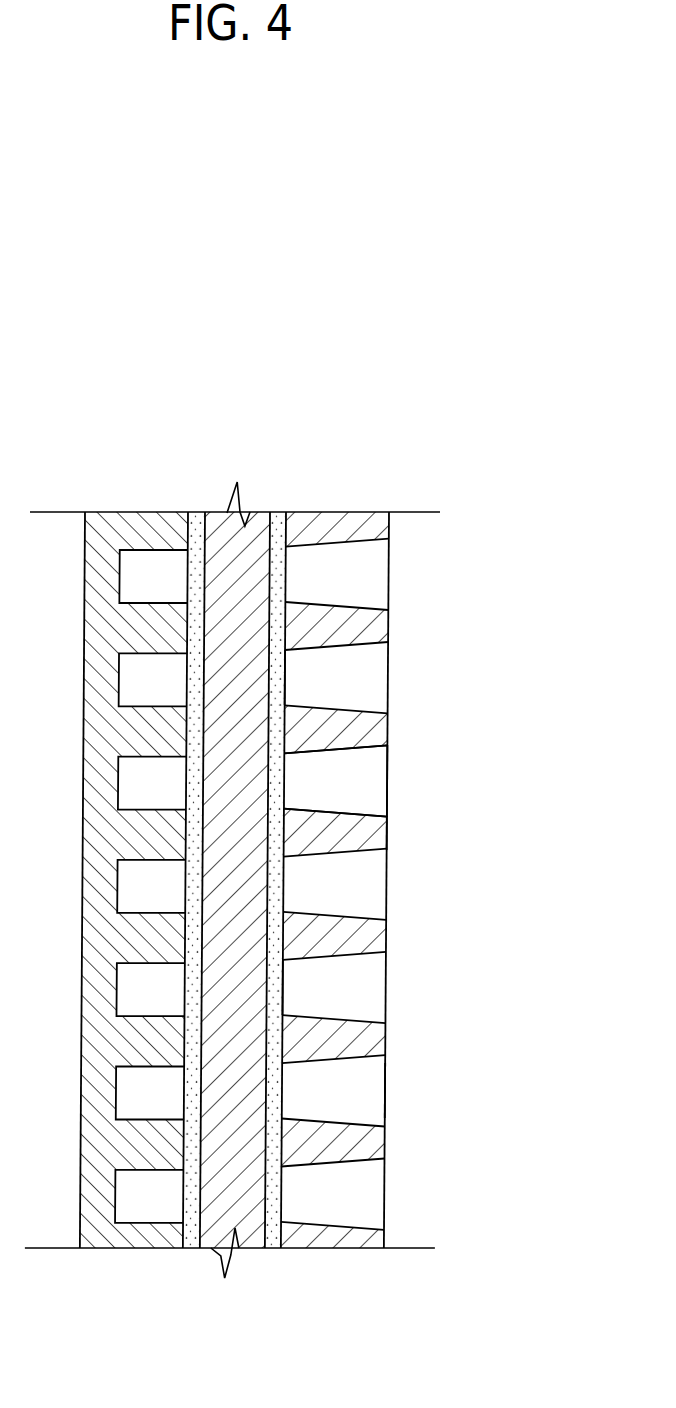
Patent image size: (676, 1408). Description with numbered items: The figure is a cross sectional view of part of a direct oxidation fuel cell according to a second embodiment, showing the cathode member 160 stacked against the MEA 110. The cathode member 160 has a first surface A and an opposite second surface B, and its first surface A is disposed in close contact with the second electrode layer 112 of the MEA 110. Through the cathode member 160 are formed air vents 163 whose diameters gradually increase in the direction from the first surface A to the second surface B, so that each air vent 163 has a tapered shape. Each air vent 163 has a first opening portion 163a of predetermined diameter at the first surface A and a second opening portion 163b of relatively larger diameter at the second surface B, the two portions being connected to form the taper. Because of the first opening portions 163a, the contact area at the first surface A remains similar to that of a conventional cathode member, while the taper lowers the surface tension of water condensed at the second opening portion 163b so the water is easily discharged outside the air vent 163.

The MEA 110 is at (210, 1266).
The second electrode layer 112 is at (277, 1250).
The cathode member 160 is at (422, 928).
The air vent 163 is at (404, 778).
The first opening portion 163a is at (276, 1012).
The second opening portion 163b is at (390, 1088).
The first surface A is at (277, 704).
The second surface B is at (391, 828).